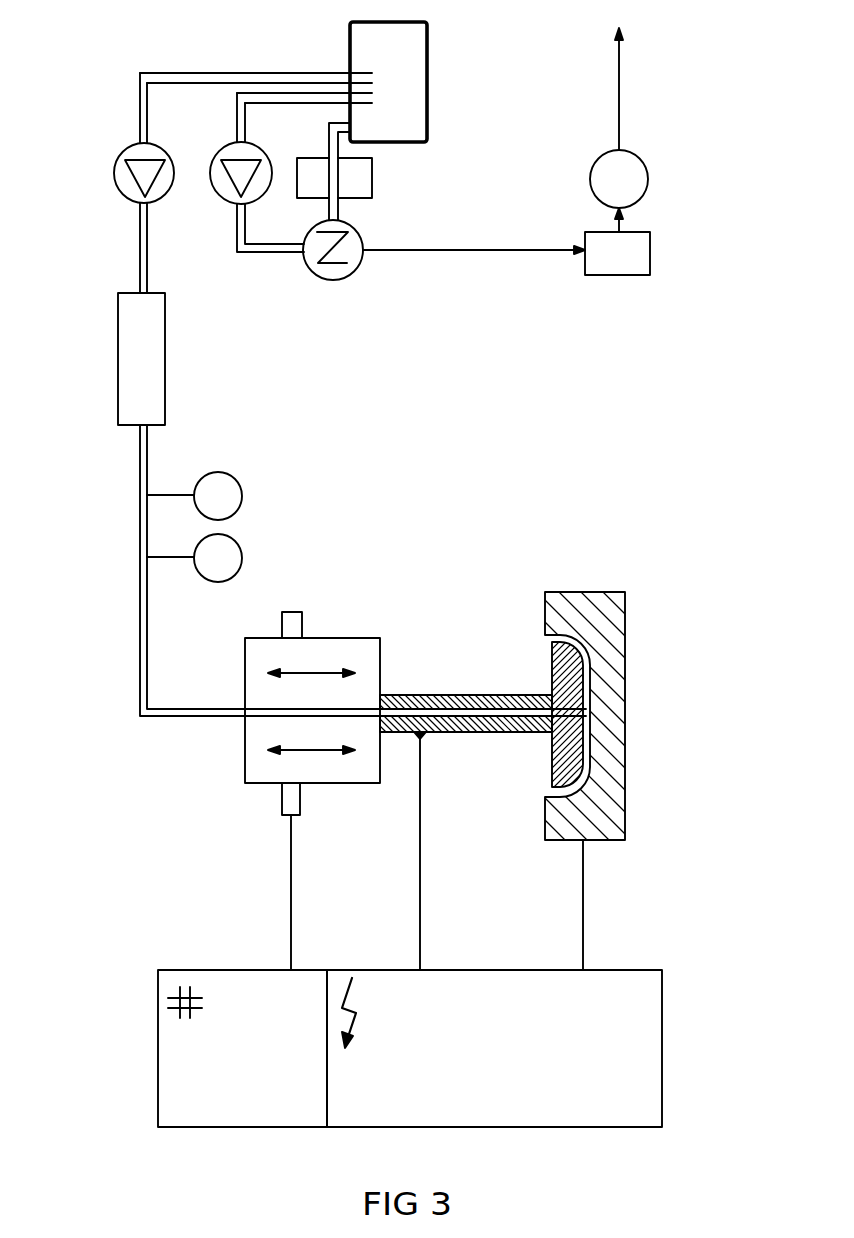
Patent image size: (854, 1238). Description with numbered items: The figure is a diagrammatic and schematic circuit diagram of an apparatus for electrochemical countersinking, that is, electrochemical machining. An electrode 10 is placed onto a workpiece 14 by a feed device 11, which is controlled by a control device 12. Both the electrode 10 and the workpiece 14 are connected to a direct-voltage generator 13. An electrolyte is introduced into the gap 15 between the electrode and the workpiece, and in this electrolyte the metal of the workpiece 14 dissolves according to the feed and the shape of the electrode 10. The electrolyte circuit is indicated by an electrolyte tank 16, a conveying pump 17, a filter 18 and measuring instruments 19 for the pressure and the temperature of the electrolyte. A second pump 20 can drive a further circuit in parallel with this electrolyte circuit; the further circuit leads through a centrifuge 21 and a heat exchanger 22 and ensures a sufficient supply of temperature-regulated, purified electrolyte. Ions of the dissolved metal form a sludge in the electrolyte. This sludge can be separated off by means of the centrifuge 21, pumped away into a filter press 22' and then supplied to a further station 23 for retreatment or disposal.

The electrode 10 is at (457, 705).
The feed device 11 is at (352, 650).
The control device 12 is at (170, 1078).
The direct-voltage generator 13 is at (647, 1082).
The workpiece 14 is at (617, 628).
The gap 15 is at (587, 733).
The electrolyte tank 16 is at (412, 52).
The conveying pump 17 is at (134, 150).
The filter 18 is at (133, 353).
The measuring instruments 19 is at (232, 503).
The pump 20 is at (234, 150).
The centrifuge 21 is at (334, 273).
The heat exchanger 22 is at (371, 180).
The filter press 22' is at (659, 241).
The further station 23 is at (642, 178).